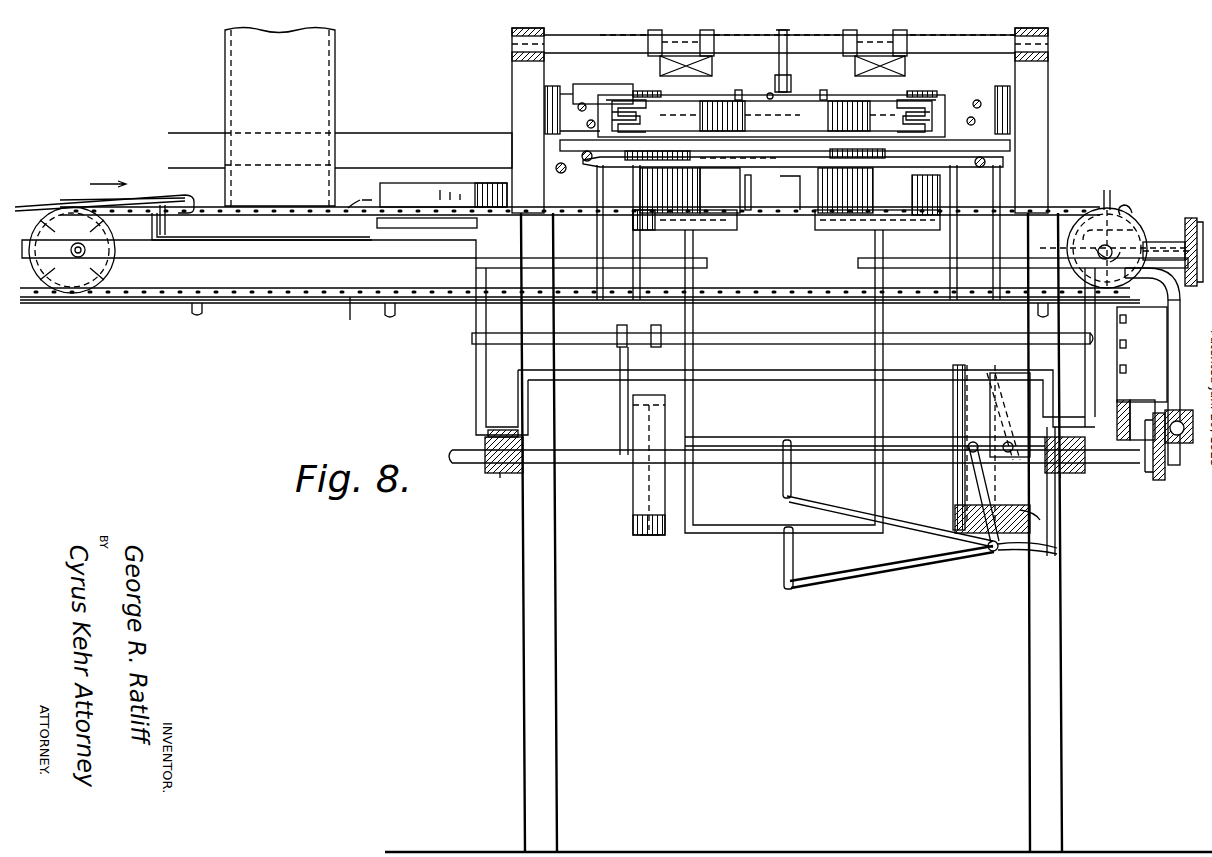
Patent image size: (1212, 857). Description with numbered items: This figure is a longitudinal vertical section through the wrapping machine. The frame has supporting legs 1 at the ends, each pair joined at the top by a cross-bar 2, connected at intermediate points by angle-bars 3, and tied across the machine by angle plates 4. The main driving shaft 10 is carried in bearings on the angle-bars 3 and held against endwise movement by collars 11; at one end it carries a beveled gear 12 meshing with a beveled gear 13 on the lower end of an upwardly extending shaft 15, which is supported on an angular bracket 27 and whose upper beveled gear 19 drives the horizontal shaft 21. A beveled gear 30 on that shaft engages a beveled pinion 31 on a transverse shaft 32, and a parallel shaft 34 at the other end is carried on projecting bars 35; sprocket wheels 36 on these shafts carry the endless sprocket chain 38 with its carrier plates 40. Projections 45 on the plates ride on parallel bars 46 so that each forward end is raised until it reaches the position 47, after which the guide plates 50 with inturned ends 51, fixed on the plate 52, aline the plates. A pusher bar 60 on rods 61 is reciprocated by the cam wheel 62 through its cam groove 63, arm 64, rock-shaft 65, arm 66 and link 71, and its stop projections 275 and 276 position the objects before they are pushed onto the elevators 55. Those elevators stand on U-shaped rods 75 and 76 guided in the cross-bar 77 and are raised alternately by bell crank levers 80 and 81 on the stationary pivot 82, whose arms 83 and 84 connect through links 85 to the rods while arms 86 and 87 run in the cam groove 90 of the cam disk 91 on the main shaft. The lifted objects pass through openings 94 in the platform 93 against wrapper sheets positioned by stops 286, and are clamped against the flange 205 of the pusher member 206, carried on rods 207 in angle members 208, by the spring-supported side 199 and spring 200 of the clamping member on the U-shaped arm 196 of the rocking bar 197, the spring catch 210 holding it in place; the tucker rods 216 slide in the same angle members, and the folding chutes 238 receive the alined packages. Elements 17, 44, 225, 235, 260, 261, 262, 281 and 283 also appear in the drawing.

The supporting legs 1 is at (523, 658).
The cross-bar 2 is at (512, 70).
The angle-bars 3 is at (488, 438).
The angle plates 4 is at (410, 133).
The main driving shaft 10 is at (458, 465).
The collars 11 is at (508, 474).
The beveled gear 12 is at (1158, 482).
The beveled gear 13 is at (1176, 443).
The shaft 15 is at (1180, 348).
The elbow 17 is at (1180, 302).
The beveled gear 19 is at (1190, 218).
The horizontal shaft 21 is at (1165, 250).
The angular bracket 27 is at (1128, 380).
The beveled gear 30 is at (1107, 210).
The beveled pinion 31 is at (1115, 232).
The transverse shaft 32 is at (1109, 266).
The shaft 34 is at (76, 258).
The projecting bars 35 is at (265, 250).
The sprocket wheels 36 is at (112, 273).
The sprocket chain 38 is at (350, 320).
The carrier plates 40 is at (47, 205).
The hopper 44 is at (225, 92).
The projections 45 is at (205, 190).
The parallel bars 46 is at (168, 222).
The position 47 is at (402, 195).
The guide plates 50 is at (460, 196).
The inturned forward ends 51 is at (778, 232).
The plate 52 is at (450, 228).
The elevators 55 is at (720, 230).
The pusher bar 60 is at (716, 190).
The rods 61 is at (990, 178).
The cam wheel 62 is at (660, 536).
The cam groove 63 is at (635, 504).
The arm 64 is at (620, 426).
The rock-shaft 65 is at (615, 340).
The arm 66 is at (655, 347).
The link 71 is at (794, 191).
The U-shaped rod 75 is at (758, 532).
The U-shaped rod 76 is at (848, 447).
The cross-bar 77 is at (710, 264).
The bell crank lever 80 is at (992, 552).
The bell crank lever 81 is at (960, 525).
The stationary pivot 82 is at (1053, 556).
The arm 83 is at (903, 572).
The arm 84 is at (907, 530).
The links 85 is at (791, 480).
The arm 86 is at (975, 477).
The arm 87 is at (1030, 518).
The cam groove 90 is at (990, 408).
The cam disk 91 is at (955, 435).
The platform 93 is at (740, 160).
The openings 94 is at (793, 160).
The U-shaped arm 196 is at (665, 35).
The rocking bar 197 is at (568, 45).
The clamping member side 199 is at (662, 60).
The spring 200 is at (714, 61).
The flange 205 is at (771, 116).
The pusher member 206 is at (580, 95).
The rods 207 is at (580, 103).
The angle members 208 is at (545, 100).
The spring catch 210 is at (740, 92).
The rods 216 is at (587, 124).
The plate 225 is at (595, 132).
The plate 235 is at (608, 142).
The folding chutes 238 is at (645, 91).
The block 260 is at (846, 137).
The slot 261 is at (616, 100).
The slot 262 is at (960, 104).
The projections 275 is at (762, 191).
The projections 276 is at (912, 183).
The rod 281 is at (787, 32).
The bolt 283 is at (773, 83).
The stops 286 is at (755, 152).